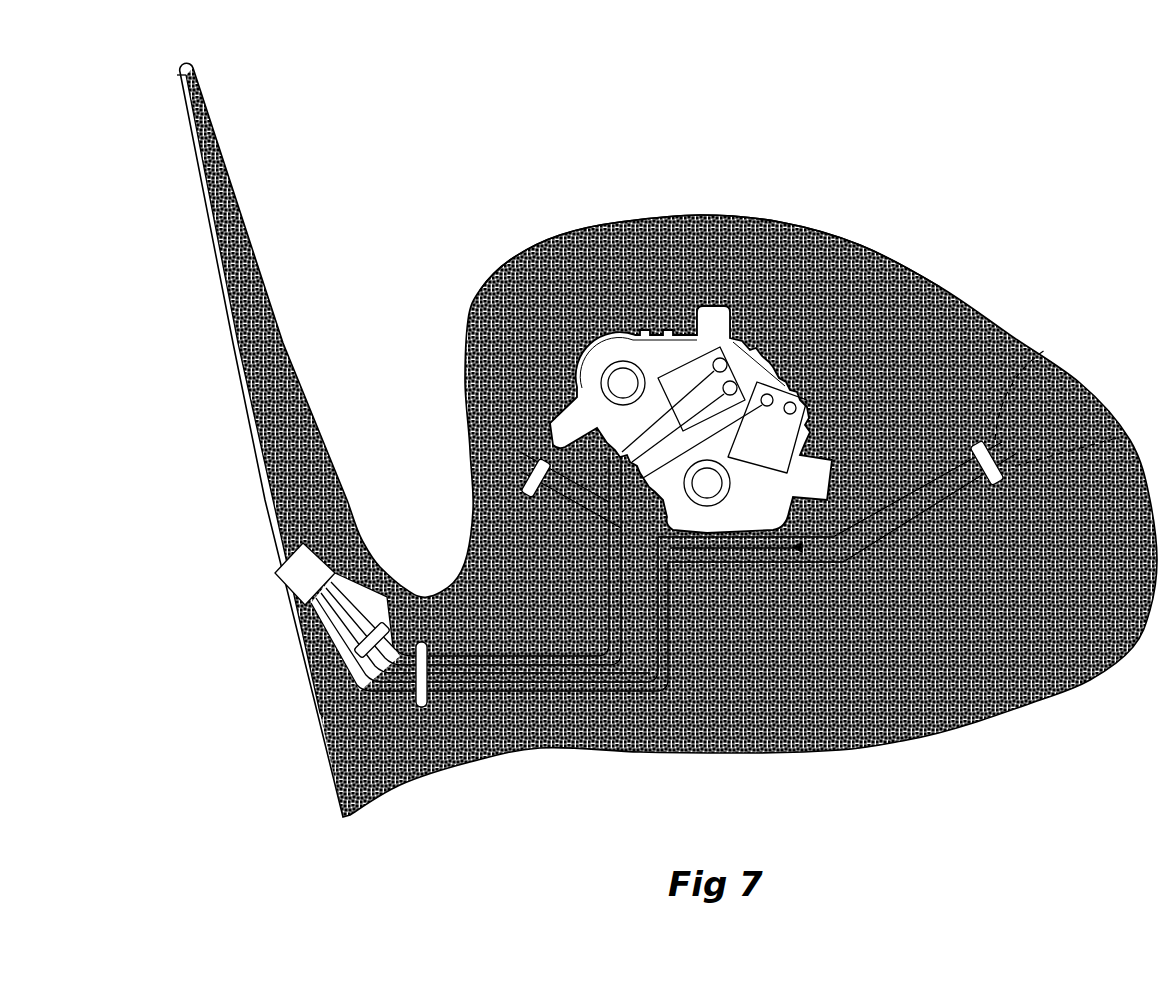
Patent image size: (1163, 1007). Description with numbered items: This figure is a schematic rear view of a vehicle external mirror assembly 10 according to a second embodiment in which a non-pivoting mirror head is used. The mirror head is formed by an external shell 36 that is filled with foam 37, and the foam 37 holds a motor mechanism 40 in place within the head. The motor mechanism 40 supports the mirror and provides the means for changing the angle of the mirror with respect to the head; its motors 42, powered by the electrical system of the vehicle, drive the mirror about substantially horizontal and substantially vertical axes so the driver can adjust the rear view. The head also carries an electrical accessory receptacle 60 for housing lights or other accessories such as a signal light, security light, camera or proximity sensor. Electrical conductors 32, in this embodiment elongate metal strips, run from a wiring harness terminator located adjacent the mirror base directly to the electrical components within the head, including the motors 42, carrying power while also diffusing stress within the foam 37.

The vehicle external mirror assembly 10 is at (1040, 248).
The electrical conductors 32 is at (797, 548).
The external shell 36 is at (812, 220).
The foam 37 is at (911, 292).
The motor mechanism 40 is at (633, 353).
The motors 42 is at (790, 490).
The electrical accessory receptacle 60 is at (1080, 383).